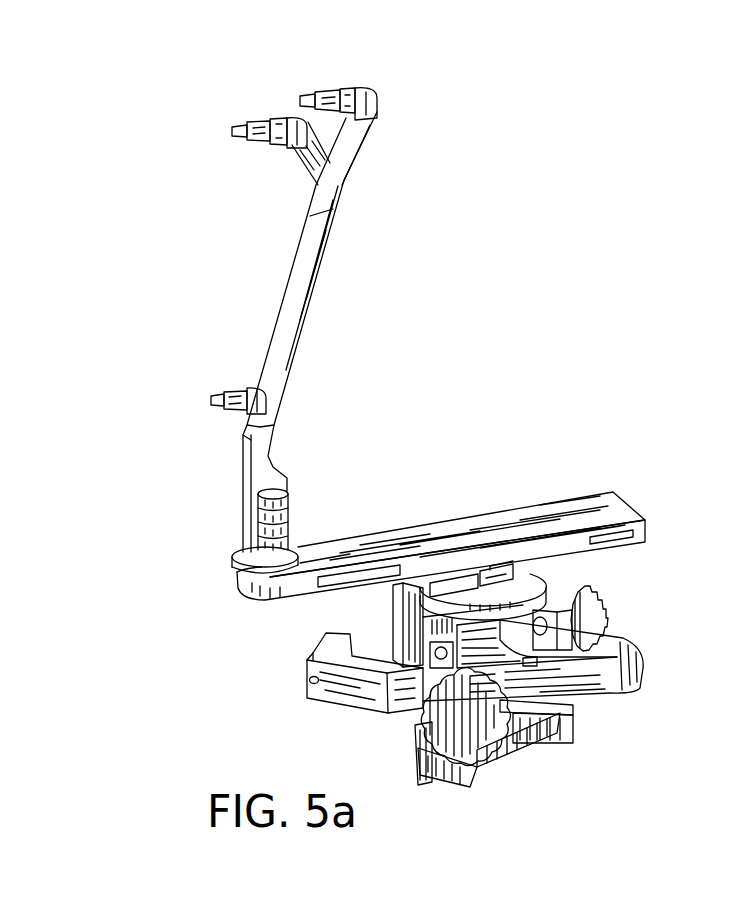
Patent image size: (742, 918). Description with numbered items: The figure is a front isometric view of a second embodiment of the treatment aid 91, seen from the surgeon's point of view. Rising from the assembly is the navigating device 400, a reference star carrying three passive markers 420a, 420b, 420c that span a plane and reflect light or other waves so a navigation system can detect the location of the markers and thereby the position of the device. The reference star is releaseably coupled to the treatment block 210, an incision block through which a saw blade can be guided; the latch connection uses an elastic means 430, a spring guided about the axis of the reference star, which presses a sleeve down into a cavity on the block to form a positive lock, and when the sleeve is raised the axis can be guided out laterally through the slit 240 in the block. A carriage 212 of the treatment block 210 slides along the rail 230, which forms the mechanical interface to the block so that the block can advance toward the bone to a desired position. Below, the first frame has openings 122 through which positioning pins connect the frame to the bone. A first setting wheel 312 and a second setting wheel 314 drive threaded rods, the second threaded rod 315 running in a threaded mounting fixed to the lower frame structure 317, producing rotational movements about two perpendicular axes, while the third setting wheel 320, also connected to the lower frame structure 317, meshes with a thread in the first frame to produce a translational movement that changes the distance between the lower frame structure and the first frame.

The treatment aid 91 is at (553, 210).
The navigating device 400 is at (293, 340).
The passive marker 420a is at (240, 125).
The passive marker 420b is at (330, 92).
The passive marker 420c is at (212, 397).
The elastic means 430 is at (289, 513).
The slit 240 is at (231, 565).
The treatment block 210 is at (481, 527).
The carriage 212 is at (500, 573).
The rail 230 is at (545, 580).
The second setting wheel 314 is at (600, 620).
The second threaded rod 315 is at (597, 603).
The openings 122 is at (306, 680).
The lower frame structure 317 is at (572, 710).
The third setting wheel 320 is at (543, 752).
The first setting wheel 312 is at (482, 760).